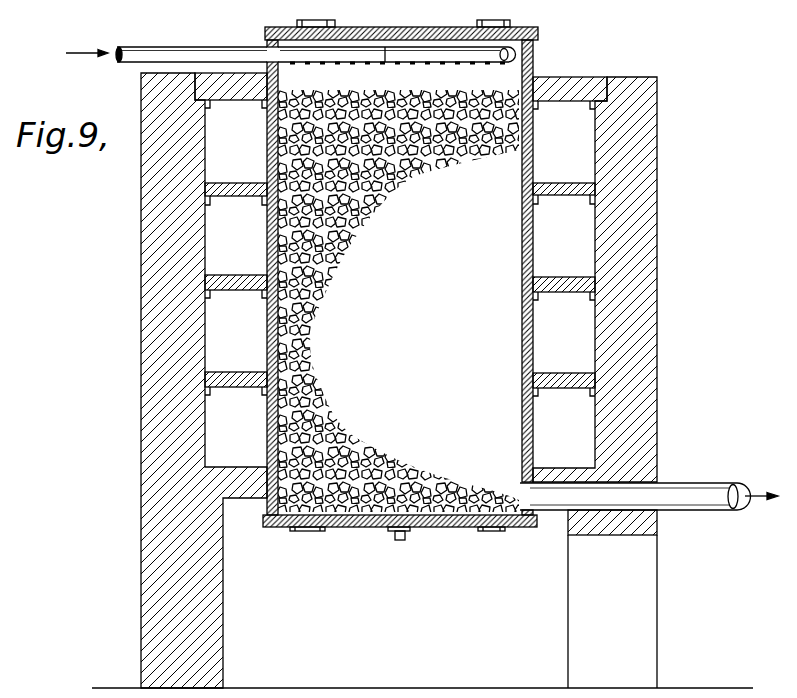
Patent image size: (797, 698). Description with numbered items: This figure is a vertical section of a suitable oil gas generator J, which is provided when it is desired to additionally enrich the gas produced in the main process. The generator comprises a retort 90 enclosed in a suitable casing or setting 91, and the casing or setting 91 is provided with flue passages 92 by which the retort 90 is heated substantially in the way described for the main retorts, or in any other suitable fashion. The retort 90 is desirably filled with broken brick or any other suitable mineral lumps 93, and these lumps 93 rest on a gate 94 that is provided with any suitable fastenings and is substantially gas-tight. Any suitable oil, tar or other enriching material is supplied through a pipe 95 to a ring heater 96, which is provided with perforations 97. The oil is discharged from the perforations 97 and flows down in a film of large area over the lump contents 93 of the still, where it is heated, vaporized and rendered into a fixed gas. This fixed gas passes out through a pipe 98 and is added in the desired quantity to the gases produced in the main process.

The oil generator J is at (660, 229).
The retort 90 is at (533, 152).
The casing or setting 91 is at (648, 175).
The flue passages 92 is at (568, 262).
The mineral lumps 93 is at (335, 233).
The gate 94 is at (368, 527).
The pipe 95 is at (190, 46).
The ring heater 96 is at (413, 48).
The perforations 97 is at (468, 62).
The pipe 98 is at (695, 482).